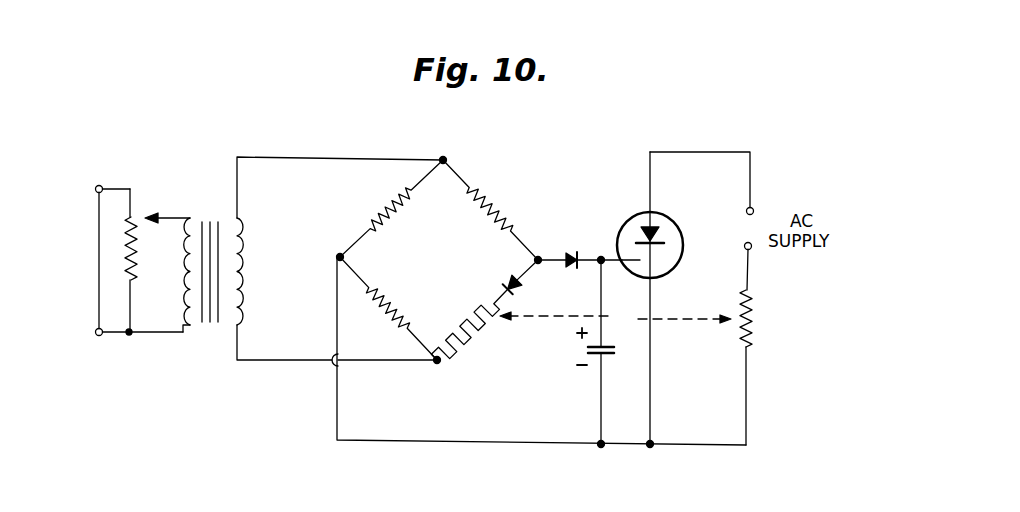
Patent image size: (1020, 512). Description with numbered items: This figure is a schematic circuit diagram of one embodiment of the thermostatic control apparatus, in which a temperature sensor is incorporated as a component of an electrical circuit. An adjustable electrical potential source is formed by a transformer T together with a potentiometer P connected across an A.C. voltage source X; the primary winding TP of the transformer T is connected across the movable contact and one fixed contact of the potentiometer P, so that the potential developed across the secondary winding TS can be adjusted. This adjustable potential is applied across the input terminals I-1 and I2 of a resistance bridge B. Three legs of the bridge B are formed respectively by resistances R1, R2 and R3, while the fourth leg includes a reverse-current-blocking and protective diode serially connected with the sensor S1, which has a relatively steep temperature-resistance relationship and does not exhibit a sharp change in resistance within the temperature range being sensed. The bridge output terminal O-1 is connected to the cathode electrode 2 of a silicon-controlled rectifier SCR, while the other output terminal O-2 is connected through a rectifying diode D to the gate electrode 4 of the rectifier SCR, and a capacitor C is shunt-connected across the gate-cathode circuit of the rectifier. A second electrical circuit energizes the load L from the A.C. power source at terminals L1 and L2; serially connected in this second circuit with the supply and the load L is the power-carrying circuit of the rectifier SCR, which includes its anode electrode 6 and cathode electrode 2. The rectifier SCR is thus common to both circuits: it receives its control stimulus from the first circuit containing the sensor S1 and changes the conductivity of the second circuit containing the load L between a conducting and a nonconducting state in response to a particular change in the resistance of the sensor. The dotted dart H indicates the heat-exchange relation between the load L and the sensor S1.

The A.C. voltage source X is at (137, 261).
The potentiometer P is at (142, 235).
The transformer T is at (208, 299).
The primary winding TP is at (187, 303).
The secondary winding TS is at (256, 271).
The resistance bridge B is at (430, 256).
The resistance R1 is at (498, 201).
The resistance R2 is at (397, 192).
The resistance R3 is at (397, 317).
The sensor S1 is at (490, 315).
The input terminal I-1 is at (446, 156).
The input terminal I2 is at (440, 363).
The bridge output terminal O-1 is at (338, 253).
The output terminal O-2 is at (550, 255).
The diode D is at (573, 271).
The capacitor C is at (616, 350).
The dotted dart H is at (615, 321).
The silicon-controlled rectifier SCR is at (622, 228).
The cathode electrode 2 is at (655, 262).
The gate electrode 4 is at (640, 262).
The electrode 6 is at (670, 226).
The A.C. power source L1 is at (746, 211).
The A.C. power source L2 is at (745, 248).
The load L is at (753, 312).